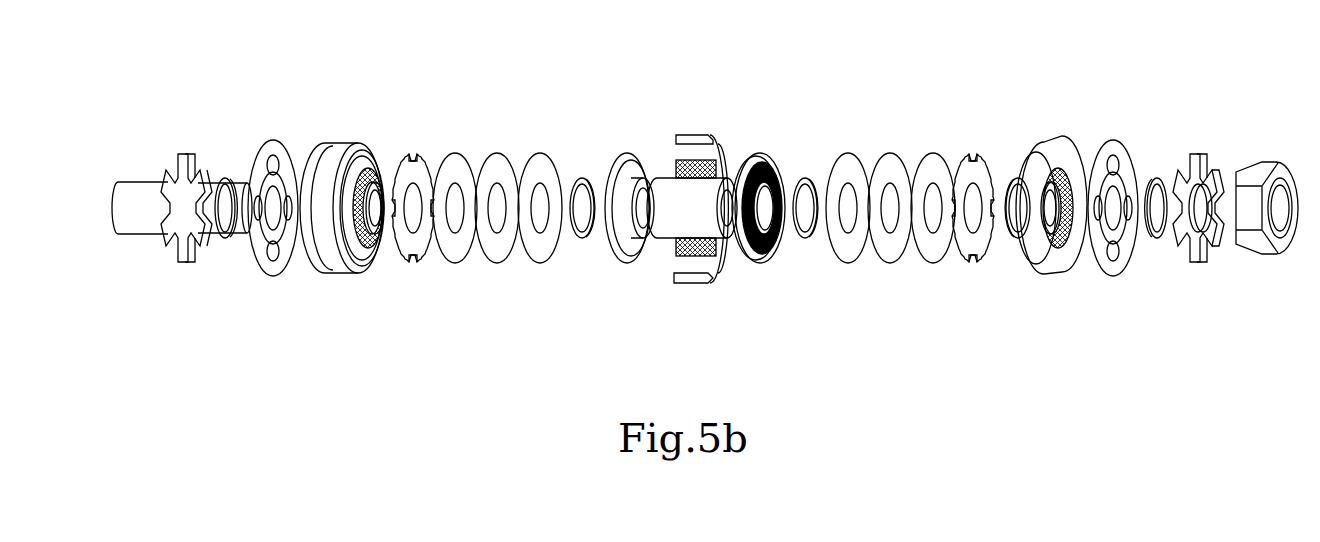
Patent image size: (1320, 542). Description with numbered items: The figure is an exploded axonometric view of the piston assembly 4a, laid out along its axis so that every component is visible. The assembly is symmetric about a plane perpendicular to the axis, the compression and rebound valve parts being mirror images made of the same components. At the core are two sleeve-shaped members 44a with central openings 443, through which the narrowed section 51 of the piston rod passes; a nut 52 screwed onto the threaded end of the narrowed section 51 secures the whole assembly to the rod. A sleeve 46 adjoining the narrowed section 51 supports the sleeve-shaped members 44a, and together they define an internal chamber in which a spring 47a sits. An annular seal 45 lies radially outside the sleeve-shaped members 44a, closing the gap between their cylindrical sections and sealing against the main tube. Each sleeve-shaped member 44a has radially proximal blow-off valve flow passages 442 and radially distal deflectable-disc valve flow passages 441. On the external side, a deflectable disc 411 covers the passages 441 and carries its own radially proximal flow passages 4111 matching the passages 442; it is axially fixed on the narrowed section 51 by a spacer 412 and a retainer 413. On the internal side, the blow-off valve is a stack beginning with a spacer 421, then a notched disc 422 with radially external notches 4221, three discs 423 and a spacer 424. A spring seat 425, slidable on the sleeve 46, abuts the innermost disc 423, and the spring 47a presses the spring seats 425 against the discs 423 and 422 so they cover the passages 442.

The narrowed section 51 is at (125, 183).
The retainer 413 is at (185, 152).
The spacer 412 is at (227, 180).
The deflectable disc 411 is at (701, 209).
The radially proximal flow passages 4111 is at (270, 250).
The deflectable-disc valve flow passages 441 is at (1103, 258).
The sleeve-shaped member 44a is at (692, 209).
The spacer 421 is at (365, 150).
The notched disc 422 is at (694, 209).
The radially external notches 4221 is at (430, 253).
The discs 423 is at (537, 170).
The spacer 424 is at (582, 185).
The spring seat 425 is at (630, 175).
The sleeve 46 is at (672, 180).
The spring 47a is at (693, 155).
The annular seal 45 is at (710, 137).
The blow-off valve flow passages 442 is at (356, 256).
The central openings 443 is at (350, 252).
The piston assembly 4a is at (960, 118).
The nut 52 is at (1250, 178).